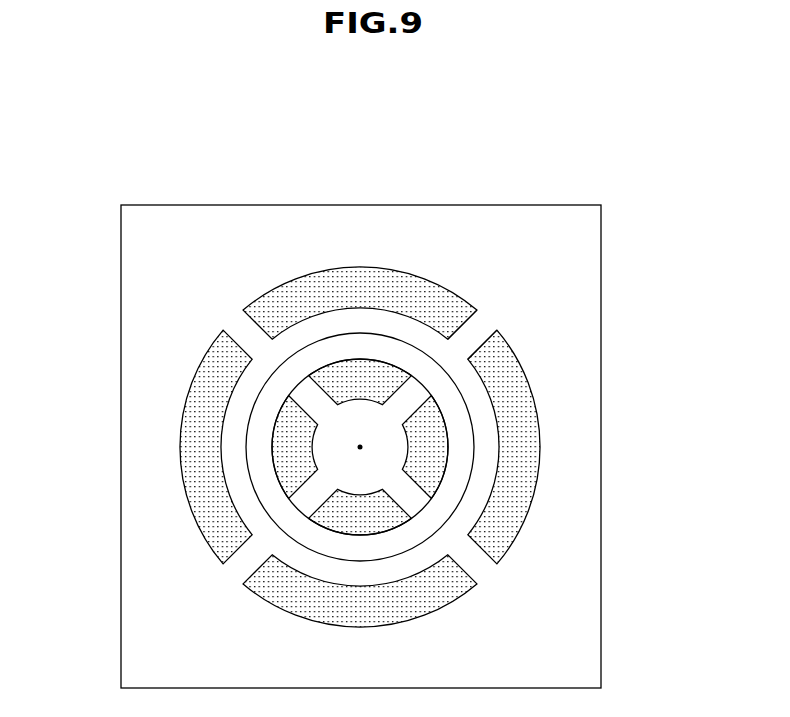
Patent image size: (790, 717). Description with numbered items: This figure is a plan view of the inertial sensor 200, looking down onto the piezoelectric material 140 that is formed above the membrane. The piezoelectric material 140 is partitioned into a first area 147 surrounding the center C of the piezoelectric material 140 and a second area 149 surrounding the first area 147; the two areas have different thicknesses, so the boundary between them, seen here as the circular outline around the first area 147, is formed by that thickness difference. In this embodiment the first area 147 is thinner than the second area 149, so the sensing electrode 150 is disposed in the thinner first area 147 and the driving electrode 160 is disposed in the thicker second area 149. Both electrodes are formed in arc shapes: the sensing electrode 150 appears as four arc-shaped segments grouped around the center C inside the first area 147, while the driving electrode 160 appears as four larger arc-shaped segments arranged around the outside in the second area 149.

The antenna device 200 is at (200, 115).
The piezoelectric material 140 is at (560, 262).
The first area 147 is at (381, 349).
The second area 149 is at (480, 327).
The sensing electrode 150 is at (435, 432).
The driving electrode 160 is at (525, 450).
The center C is at (360, 448).